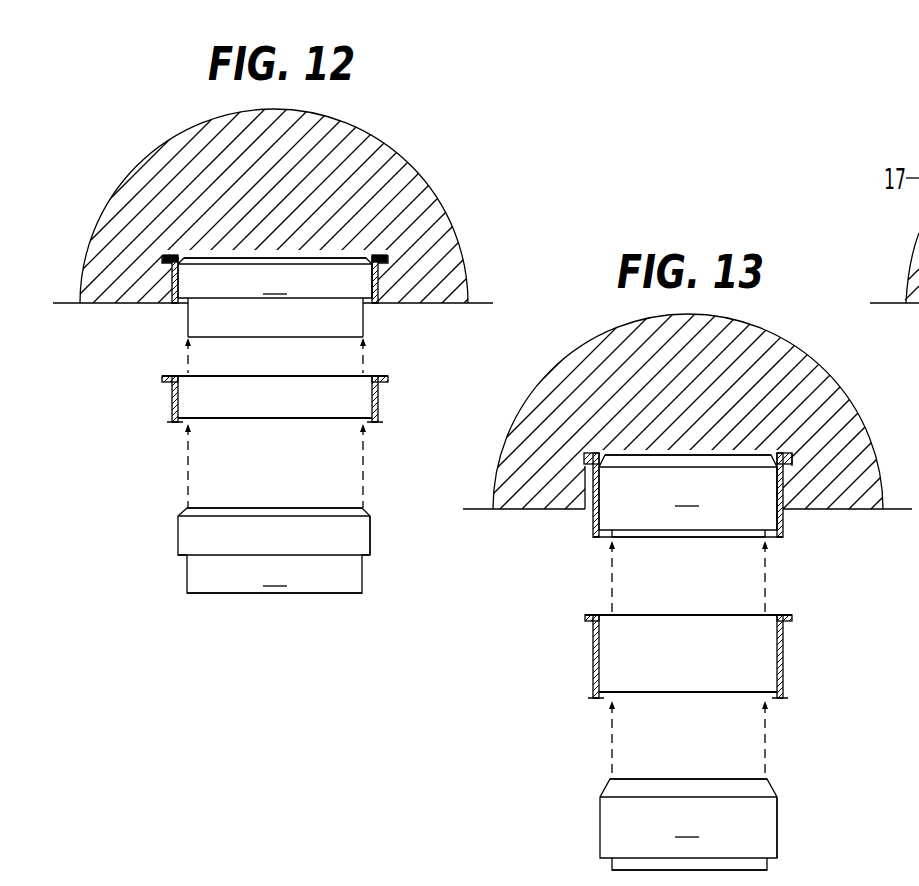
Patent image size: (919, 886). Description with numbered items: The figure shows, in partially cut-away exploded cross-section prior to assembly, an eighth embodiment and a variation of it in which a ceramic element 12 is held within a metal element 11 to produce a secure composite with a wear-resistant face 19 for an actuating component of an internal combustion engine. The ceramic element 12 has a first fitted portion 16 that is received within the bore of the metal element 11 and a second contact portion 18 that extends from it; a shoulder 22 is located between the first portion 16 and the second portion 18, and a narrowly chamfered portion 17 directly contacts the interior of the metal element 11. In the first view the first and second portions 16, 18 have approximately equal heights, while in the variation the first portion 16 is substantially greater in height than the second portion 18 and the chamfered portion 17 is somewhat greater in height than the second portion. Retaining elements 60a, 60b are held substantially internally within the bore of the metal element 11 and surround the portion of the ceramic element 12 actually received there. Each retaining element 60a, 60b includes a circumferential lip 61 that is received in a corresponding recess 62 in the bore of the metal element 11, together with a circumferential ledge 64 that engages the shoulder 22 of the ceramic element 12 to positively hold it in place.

In FIG. 12, the metal element 11 is at (422, 179).
In FIG. 13, the metal element 11 is at (836, 383).
In FIG. 12, the ceramic element 12 is at (275, 424).
In FIG. 13, the ceramic element 12 is at (688, 656).
In FIG. 12, the first fitted portion 16 is at (195, 328).
In FIG. 13, the first fitted portion 16 is at (625, 865).
In FIG. 12, the chamfered portion 17 is at (363, 250).
In FIG. 13, the chamfered portion 17 is at (607, 455).
In FIG. 12, the second contact portion 18 is at (360, 282).
In FIG. 13, the second contact portion 18 is at (768, 517).
In FIG. 12, the wear-resistant face 19 is at (278, 337).
In FIG. 13, the wear-resistant face 19 is at (690, 540).
In FIG. 12, the shoulder 22 is at (182, 558).
In FIG. 12, the retaining element 60a is at (170, 290).
In FIG. 13, the retaining element 60b is at (591, 518).
In FIG. 12, the circumferential lip 61 is at (179, 256).
In FIG. 13, the circumferential lip 61 is at (793, 450).
In FIG. 12, the recess 62 is at (163, 258).
In FIG. 13, the recess 62 is at (583, 455).
In FIG. 12, the circumferential ledge 64 is at (176, 304).
In FIG. 13, the circumferential ledge 64 is at (597, 540).